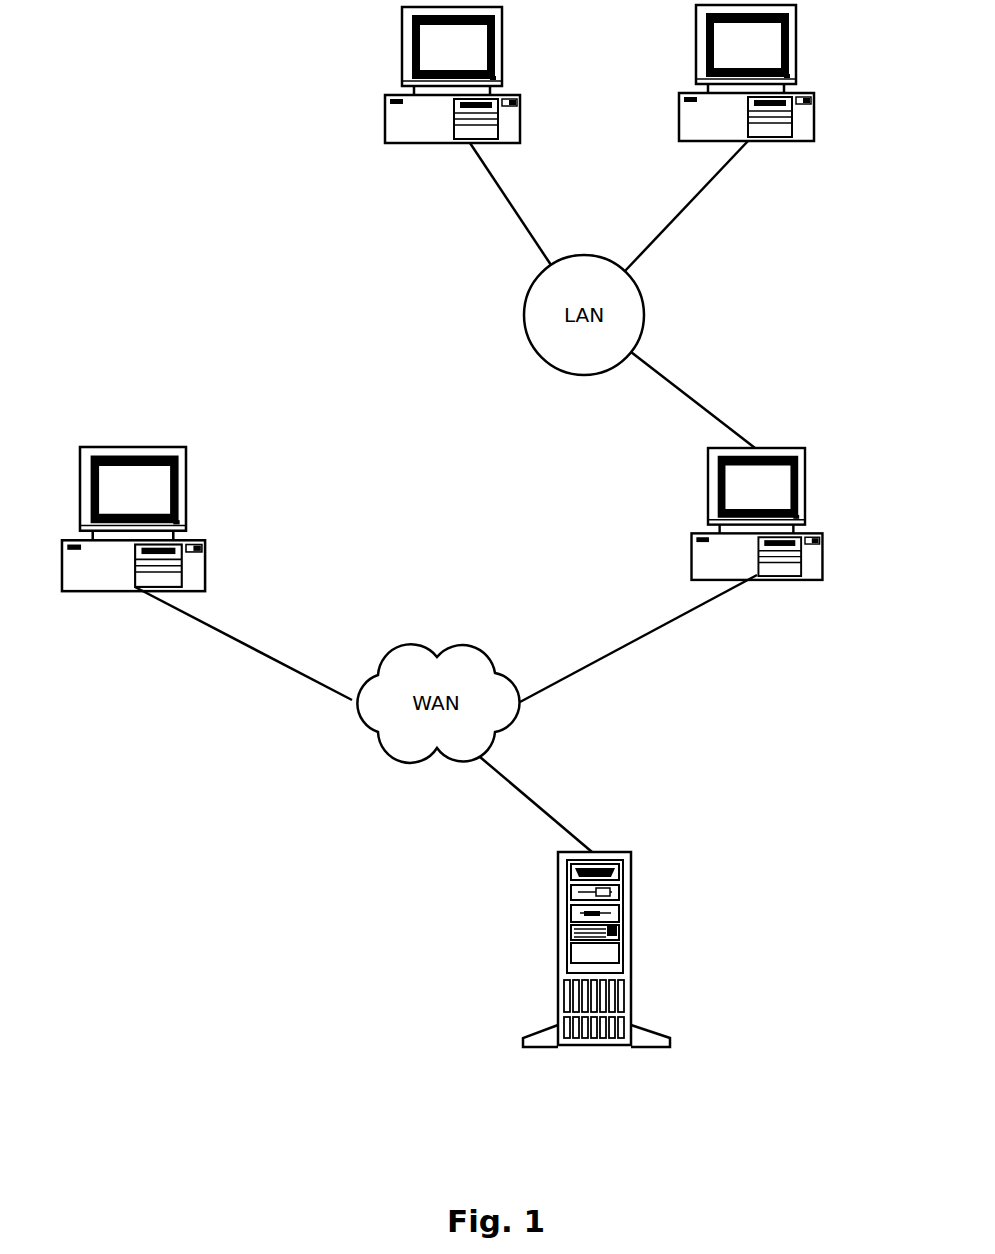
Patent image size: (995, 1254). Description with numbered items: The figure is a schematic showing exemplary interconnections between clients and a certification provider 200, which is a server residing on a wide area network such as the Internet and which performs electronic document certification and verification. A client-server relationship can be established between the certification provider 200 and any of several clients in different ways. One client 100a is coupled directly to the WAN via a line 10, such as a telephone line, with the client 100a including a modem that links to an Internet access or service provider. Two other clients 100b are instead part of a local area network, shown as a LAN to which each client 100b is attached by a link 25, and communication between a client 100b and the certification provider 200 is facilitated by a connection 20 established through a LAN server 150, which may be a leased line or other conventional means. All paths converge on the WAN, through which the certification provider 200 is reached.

The client 100a is at (129, 541).
The client 100b is at (596, 93).
The line 10 is at (243, 643).
The connection 20 is at (638, 638).
The connection between client and LAN 25 is at (510, 204).
The LAN server 150 is at (761, 549).
The certification provider 200 is at (594, 977).